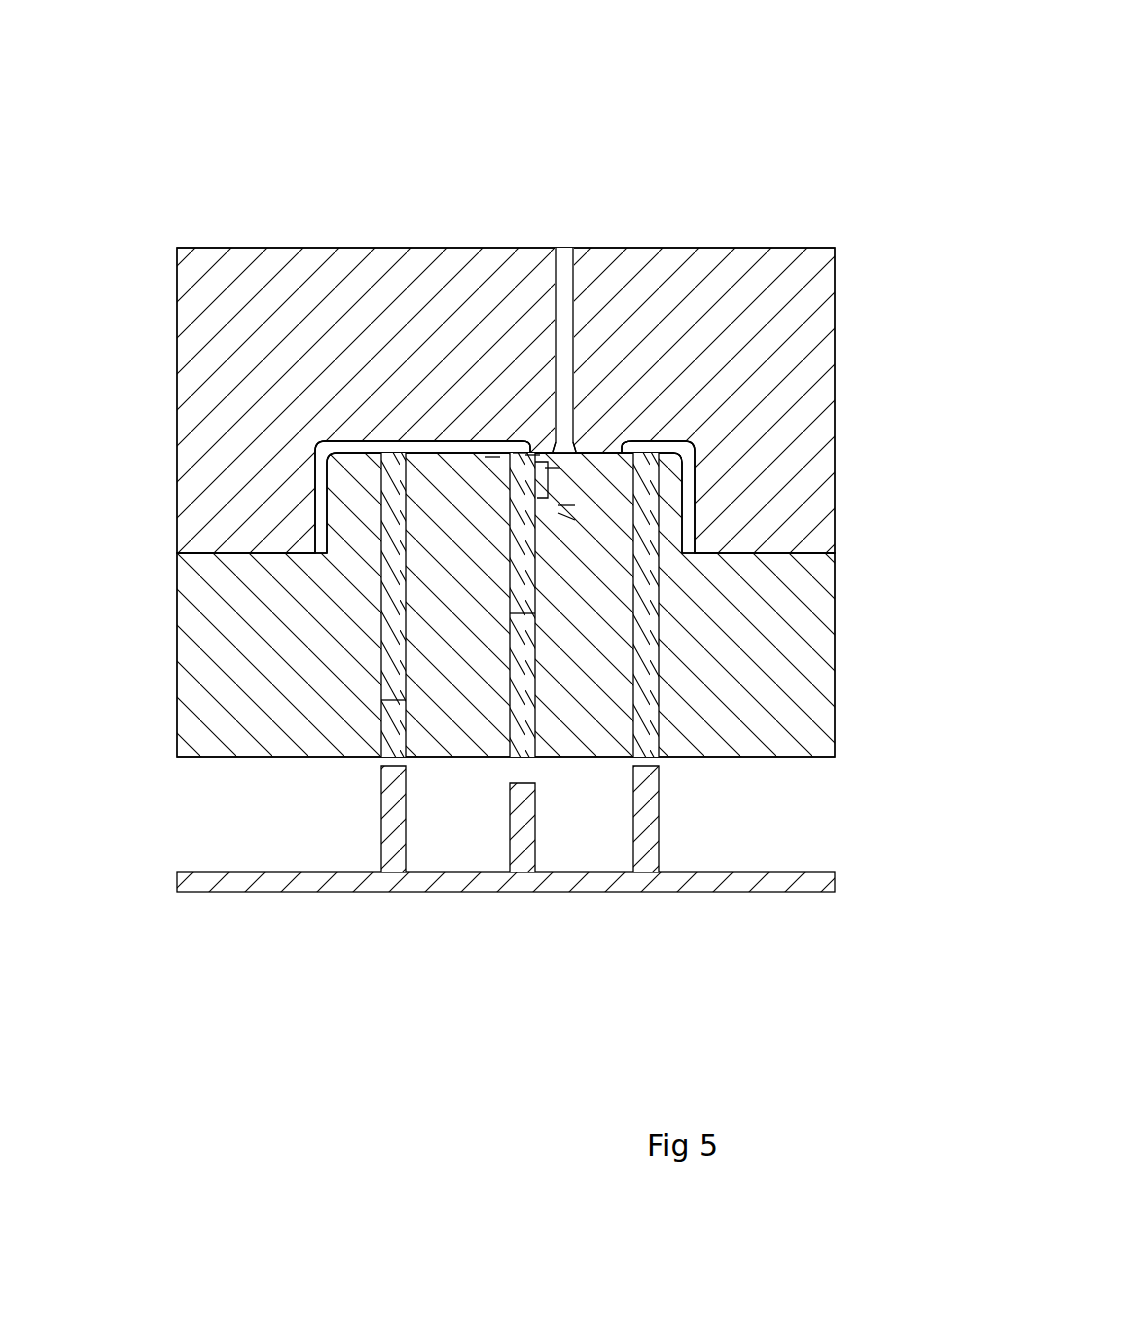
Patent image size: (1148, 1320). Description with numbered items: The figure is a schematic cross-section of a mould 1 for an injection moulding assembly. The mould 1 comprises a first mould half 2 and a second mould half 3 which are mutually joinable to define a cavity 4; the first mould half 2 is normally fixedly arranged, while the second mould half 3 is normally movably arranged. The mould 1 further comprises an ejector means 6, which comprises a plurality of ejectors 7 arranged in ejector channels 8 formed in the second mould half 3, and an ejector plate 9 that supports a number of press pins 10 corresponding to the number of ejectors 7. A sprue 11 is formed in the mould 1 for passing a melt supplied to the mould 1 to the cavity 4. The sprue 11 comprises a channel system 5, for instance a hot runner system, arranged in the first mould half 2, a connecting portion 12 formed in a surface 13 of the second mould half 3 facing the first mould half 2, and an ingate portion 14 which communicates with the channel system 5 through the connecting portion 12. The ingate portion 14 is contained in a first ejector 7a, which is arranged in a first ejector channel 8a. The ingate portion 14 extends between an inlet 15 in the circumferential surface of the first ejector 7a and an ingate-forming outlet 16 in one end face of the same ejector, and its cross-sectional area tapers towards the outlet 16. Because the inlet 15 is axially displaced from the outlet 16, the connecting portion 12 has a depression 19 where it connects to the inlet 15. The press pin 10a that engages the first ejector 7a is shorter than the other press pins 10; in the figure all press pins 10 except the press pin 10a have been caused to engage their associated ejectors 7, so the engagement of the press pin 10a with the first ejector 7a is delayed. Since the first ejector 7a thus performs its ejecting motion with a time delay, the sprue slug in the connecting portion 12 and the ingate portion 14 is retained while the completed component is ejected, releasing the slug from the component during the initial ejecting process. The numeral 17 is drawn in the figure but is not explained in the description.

The mould 1 is at (290, 166).
The first mould half 2 is at (793, 347).
The second mould half 3 is at (795, 652).
The cavity 4 is at (364, 452).
The channel system 5 is at (563, 347).
The ejector means 6 is at (506, 919).
The ejectors 7 is at (390, 700).
The first ejector 7a is at (523, 718).
The ejector channels 8 is at (380, 616).
The first ejector channel 8a is at (520, 610).
The ejector plate 9 is at (395, 882).
The press pins 10 is at (395, 785).
The press pin 10a is at (522, 798).
The sprue 11 is at (580, 426).
The connecting portion 12 is at (545, 468).
The surface 13 is at (600, 455).
The ingate portion 14 is at (505, 485).
The inlet 15 is at (558, 513).
The ingate-forming outlet 16 is at (535, 485).
The film fold 17 is at (548, 500).
The depression 19 is at (558, 505).